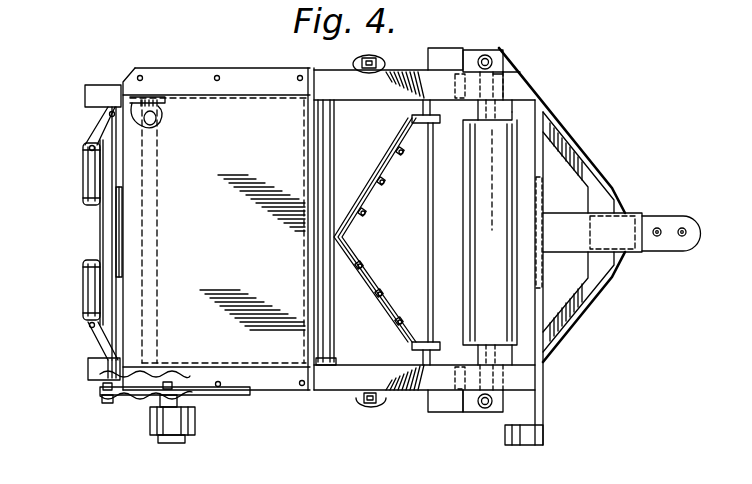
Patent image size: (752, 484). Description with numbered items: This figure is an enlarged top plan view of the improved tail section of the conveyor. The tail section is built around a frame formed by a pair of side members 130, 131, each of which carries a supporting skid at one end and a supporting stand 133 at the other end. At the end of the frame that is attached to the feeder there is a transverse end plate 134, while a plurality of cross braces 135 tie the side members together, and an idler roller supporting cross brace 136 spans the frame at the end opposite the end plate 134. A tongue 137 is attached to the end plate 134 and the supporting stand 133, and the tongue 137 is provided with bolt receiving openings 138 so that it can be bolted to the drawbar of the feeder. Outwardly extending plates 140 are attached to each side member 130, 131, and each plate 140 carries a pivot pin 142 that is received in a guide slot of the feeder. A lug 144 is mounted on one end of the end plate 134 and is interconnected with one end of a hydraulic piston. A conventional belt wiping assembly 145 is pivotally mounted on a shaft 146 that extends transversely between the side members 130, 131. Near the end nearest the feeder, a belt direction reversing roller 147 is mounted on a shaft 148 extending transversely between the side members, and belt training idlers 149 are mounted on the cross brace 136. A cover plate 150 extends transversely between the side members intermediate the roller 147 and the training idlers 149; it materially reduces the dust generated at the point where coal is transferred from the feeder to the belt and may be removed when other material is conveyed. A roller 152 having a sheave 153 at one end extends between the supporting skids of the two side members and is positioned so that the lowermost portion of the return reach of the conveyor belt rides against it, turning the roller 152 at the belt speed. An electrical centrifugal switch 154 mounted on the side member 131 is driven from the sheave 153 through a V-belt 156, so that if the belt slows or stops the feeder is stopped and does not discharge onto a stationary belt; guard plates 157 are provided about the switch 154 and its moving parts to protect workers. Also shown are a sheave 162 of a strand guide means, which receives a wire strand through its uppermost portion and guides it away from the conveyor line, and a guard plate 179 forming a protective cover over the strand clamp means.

The side member 130 is at (328, 80).
The side member 131 is at (315, 390).
The supporting stand 133 is at (178, 385).
The transverse end plate 134 is at (541, 384).
The cross brace 135 is at (187, 96).
The idler roller supporting cross brace 136 is at (107, 229).
The tongue 137 is at (644, 222).
The bolt receiving openings 138 is at (657, 238).
The outwardly extending plate 140 is at (440, 58).
The pivot pin 142 is at (491, 55).
The lug 144 is at (520, 447).
The belt wiping assembly 145 is at (390, 314).
The shaft 146 is at (435, 233).
The belt direction reversing roller 147 is at (503, 250).
The shaft 148 is at (503, 82).
The belt training idlers 149 is at (83, 178).
The cover plate 150 is at (250, 252).
The roller 152 is at (110, 400).
The sheave 153 is at (100, 396).
The electrical centrifugal switch 154 is at (168, 437).
The V-belt 156 is at (142, 398).
The guard plates 157 is at (195, 412).
The sheave 162 is at (375, 62).
The guard plate 179 is at (228, 70).